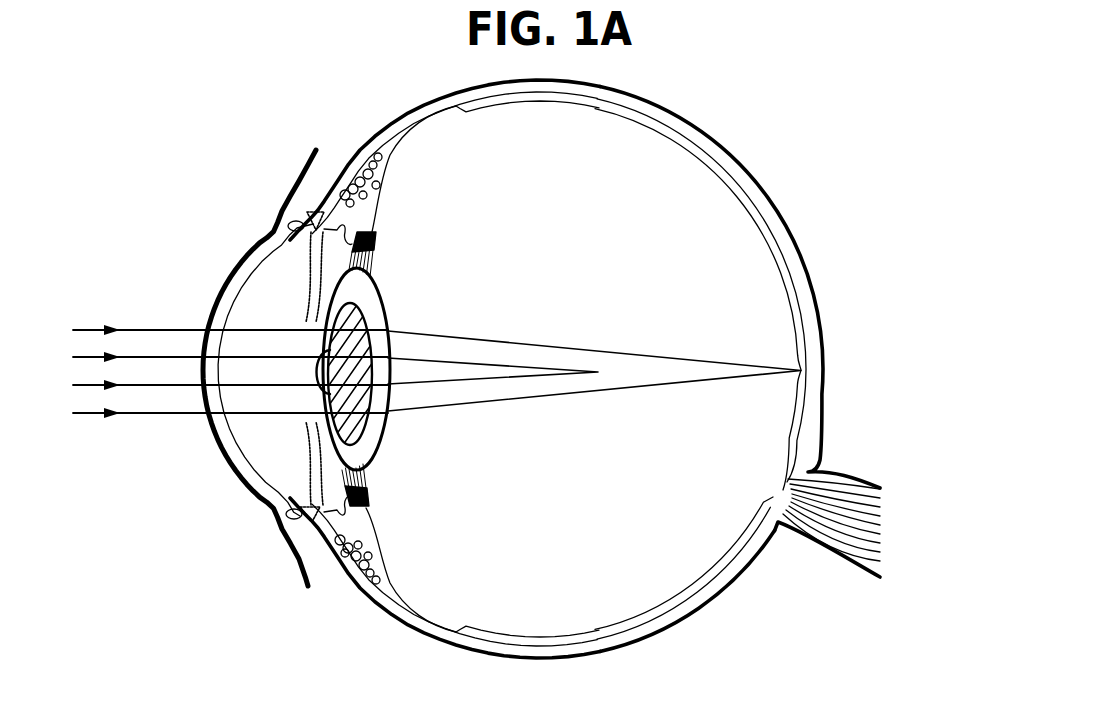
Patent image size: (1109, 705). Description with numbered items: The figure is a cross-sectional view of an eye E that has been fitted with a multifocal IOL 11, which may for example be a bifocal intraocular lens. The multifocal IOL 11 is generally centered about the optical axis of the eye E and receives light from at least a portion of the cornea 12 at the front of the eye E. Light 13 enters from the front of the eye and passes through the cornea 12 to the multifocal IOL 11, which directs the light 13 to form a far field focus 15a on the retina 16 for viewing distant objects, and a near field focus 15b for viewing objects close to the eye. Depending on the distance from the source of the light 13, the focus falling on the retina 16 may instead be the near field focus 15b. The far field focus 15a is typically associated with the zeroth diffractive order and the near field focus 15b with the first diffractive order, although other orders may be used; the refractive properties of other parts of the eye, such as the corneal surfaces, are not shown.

The multifocal IOL 11 is at (355, 320).
The cornea 12 is at (250, 492).
The light 13 is at (152, 312).
The far field focus 15a is at (802, 370).
The near field focus 15b is at (588, 372).
The retina 16 is at (805, 308).
The eye E is at (802, 203).